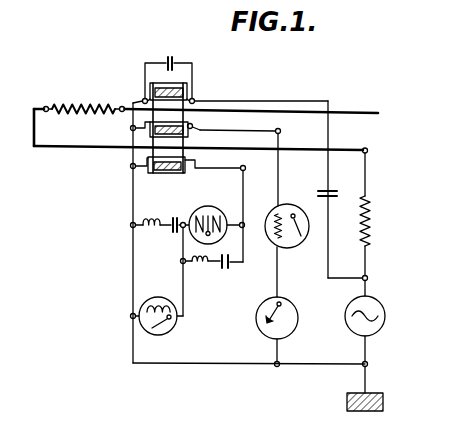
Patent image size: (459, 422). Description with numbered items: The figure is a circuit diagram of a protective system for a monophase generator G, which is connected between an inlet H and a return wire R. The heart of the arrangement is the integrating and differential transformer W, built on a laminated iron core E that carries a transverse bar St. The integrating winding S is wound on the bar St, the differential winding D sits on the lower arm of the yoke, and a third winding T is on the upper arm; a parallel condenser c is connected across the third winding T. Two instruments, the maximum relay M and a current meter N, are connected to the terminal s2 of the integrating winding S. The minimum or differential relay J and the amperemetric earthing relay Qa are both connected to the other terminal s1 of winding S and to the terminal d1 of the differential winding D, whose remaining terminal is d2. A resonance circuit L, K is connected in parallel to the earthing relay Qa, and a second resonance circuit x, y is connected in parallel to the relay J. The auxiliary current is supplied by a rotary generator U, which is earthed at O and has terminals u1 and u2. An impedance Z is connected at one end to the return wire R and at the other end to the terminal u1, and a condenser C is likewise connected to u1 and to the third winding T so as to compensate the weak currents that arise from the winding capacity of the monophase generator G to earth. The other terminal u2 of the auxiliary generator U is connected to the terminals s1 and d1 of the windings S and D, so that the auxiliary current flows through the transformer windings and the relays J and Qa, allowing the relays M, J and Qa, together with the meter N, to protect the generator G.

The parallel condenser c is at (167, 62).
The integrating and differential transformer W is at (180, 70).
The third winding T is at (195, 98).
The monophase generator G is at (84, 98).
The inlet H is at (355, 111).
The terminal of winding S s1 is at (130, 129).
The integrating winding S is at (192, 125).
The transverse bar St is at (186, 132).
The terminal of winding S s2 is at (289, 133).
The return wire R is at (354, 149).
The terminal of winding D d1 is at (130, 167).
The laminated iron core E is at (163, 173).
The differential winding D is at (186, 171).
The terminal of winding D d2 is at (255, 169).
The resonance circuit element L is at (153, 221).
The resonance circuit element K is at (173, 217).
The minimum or differential relay J is at (226, 214).
The resonance circuit element x is at (203, 267).
The resonance circuit element y is at (228, 269).
The amperemetric earthing relay Qa is at (176, 327).
The maximum relay M is at (293, 247).
The current meter N is at (293, 330).
The condenser C is at (334, 196).
The impedance Z is at (370, 216).
The terminal of auxiliary generator u1 is at (368, 278).
The rotary generator U is at (384, 311).
The terminal of auxiliary generator u2 is at (368, 364).
The earth O is at (384, 403).